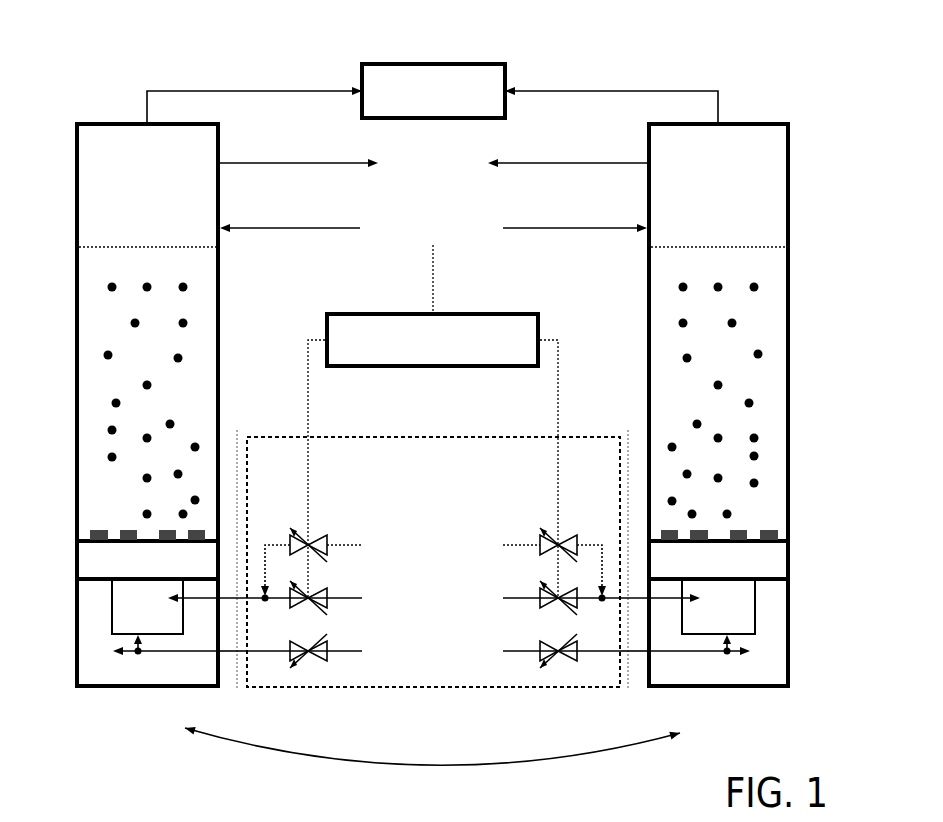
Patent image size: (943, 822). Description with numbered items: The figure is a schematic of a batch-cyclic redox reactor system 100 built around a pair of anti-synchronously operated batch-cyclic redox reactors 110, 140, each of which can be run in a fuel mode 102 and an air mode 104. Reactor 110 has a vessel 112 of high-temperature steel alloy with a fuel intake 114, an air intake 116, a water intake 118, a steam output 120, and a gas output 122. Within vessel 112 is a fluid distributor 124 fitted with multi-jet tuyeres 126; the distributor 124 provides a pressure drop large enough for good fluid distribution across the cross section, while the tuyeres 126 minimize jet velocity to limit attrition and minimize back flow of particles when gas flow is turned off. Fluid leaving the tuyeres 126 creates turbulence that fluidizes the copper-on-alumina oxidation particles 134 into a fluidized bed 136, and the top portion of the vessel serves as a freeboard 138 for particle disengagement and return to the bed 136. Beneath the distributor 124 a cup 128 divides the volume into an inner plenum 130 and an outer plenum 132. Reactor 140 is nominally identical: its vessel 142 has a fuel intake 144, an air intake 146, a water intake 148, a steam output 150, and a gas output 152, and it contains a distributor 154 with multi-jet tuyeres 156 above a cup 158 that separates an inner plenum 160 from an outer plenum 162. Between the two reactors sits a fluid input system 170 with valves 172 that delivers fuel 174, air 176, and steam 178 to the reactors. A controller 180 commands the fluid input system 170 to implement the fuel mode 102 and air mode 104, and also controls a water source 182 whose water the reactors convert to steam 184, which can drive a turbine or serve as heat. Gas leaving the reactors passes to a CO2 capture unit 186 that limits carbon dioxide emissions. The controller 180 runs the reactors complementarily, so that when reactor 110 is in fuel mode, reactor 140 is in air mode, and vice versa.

The batch-cyclic redox reactor system 100 is at (443, 42).
The fuel mode 102 is at (196, 380).
The air mode 104 is at (670, 380).
The batch-cyclic redox reactor 110 is at (156, 61).
The vessel 112 is at (220, 292).
The fuel intake 114 is at (246, 545).
The air intake 116 is at (237, 655).
The water intake 118 is at (226, 222).
The steam output 120 is at (225, 162).
The gas output 122 is at (147, 104).
The fluid distributor 124 is at (88, 560).
The multi-jet tuyeres 126 is at (130, 530).
The cup 128 is at (108, 624).
The inner plenum 130 is at (156, 609).
The outer plenum 132 is at (165, 679).
The oxidation particles 134 is at (180, 350).
The fluidized bed 136 is at (157, 371).
The freeboard 138 is at (165, 182).
The batch-cyclic redox reactor 140 is at (736, 61).
The vessel 142 is at (647, 292).
The fuel intake 144 is at (615, 546).
The air intake 146 is at (628, 655).
The water intake 148 is at (645, 224).
The steam output 150 is at (647, 160).
The gas output 152 is at (737, 96).
The distributor 154 is at (790, 560).
The multi-jet tuyeres 156 is at (770, 530).
The cup 158 is at (756, 622).
The inner plenum 160 is at (747, 614).
The outer plenum 162 is at (710, 678).
The fluid input system 170 is at (450, 497).
The valves 172 is at (330, 592).
The fuel 174 is at (433, 589).
The air 176 is at (433, 651).
The steam 178 is at (433, 565).
The controller 180 is at (433, 456).
The water source 182 is at (433, 266).
The steam 184 is at (433, 164).
The CO2 capture unit 186 is at (448, 113).